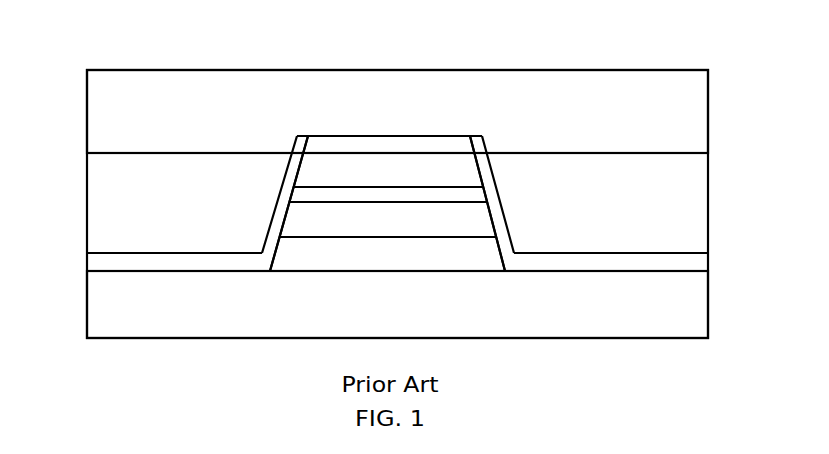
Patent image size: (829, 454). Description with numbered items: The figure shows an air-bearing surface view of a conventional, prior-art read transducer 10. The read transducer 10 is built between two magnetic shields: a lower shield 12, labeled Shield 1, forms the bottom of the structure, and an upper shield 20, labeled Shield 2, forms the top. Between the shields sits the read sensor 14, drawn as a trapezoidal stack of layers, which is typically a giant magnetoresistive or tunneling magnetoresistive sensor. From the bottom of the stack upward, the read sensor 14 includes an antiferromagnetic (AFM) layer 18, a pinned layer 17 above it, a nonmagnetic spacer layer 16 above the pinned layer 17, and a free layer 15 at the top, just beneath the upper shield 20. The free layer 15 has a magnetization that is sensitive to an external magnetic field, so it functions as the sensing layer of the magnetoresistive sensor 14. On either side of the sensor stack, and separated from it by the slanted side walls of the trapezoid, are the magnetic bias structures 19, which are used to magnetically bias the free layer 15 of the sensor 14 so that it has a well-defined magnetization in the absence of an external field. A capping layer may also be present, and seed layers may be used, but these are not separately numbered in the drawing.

The conventional read transducer 10 is at (402, 32).
The shield 12 is at (708, 307).
The read sensor 14 is at (456, 292).
The free layer 15 is at (293, 176).
The nonmagnetic spacer layer 16 is at (290, 196).
The pinned layer 17 is at (495, 223).
The antiferromagnetic (AFM) layer 18 is at (313, 273).
The magnetic bias structures 19 is at (87, 220).
The shield 20 is at (87, 120).